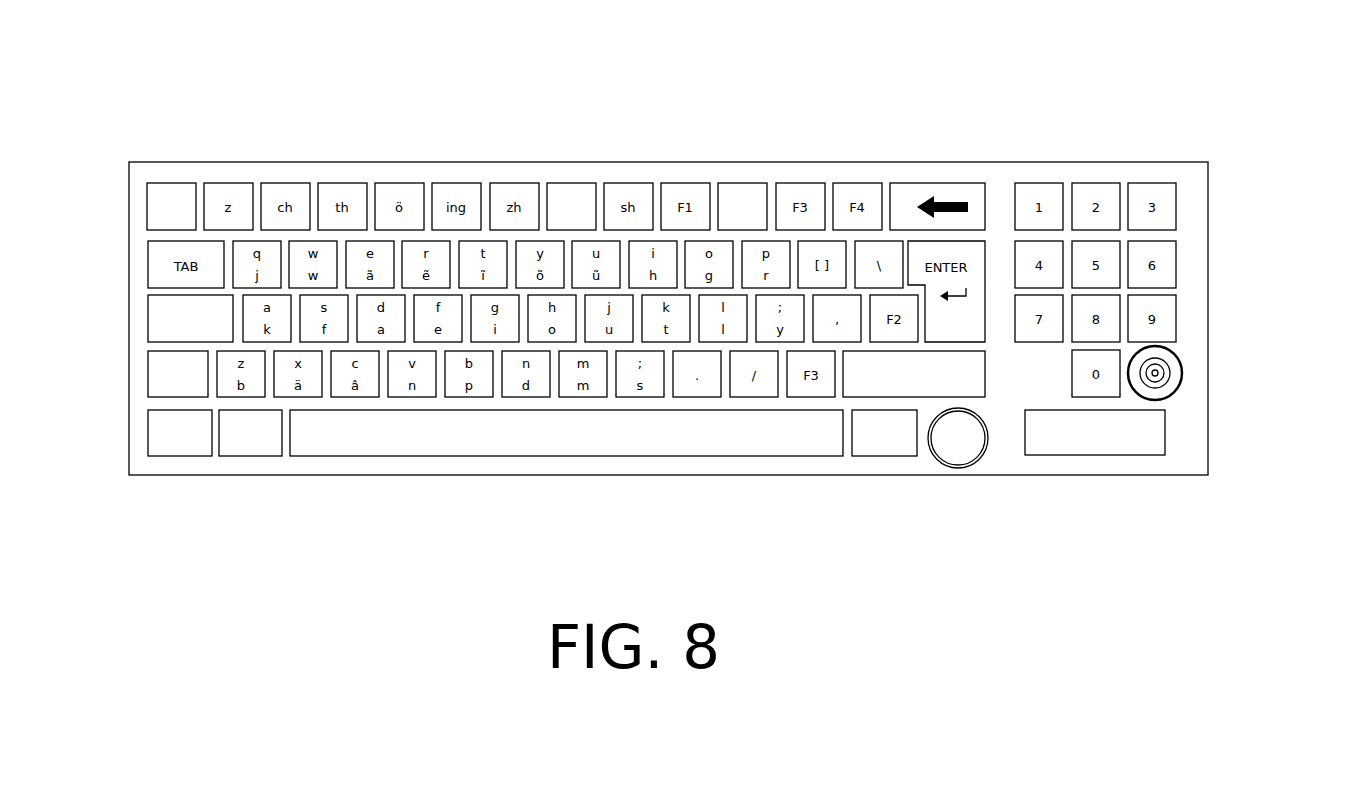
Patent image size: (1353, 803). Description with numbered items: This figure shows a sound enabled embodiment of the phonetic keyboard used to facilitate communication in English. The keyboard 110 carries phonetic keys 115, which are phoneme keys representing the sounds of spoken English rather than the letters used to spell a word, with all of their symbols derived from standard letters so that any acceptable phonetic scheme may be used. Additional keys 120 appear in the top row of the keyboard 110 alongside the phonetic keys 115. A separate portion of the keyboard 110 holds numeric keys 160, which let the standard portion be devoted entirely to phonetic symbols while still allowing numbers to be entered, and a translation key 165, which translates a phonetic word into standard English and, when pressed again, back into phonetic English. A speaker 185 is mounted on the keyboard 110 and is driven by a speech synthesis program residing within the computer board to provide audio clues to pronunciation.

The keyboard 110 is at (263, 168).
The phonetic keys 115 is at (562, 195).
The function key 120 is at (737, 195).
The numeric keys 160 is at (1045, 200).
The translation key 165 is at (1090, 442).
The speaker 185 is at (1177, 360).